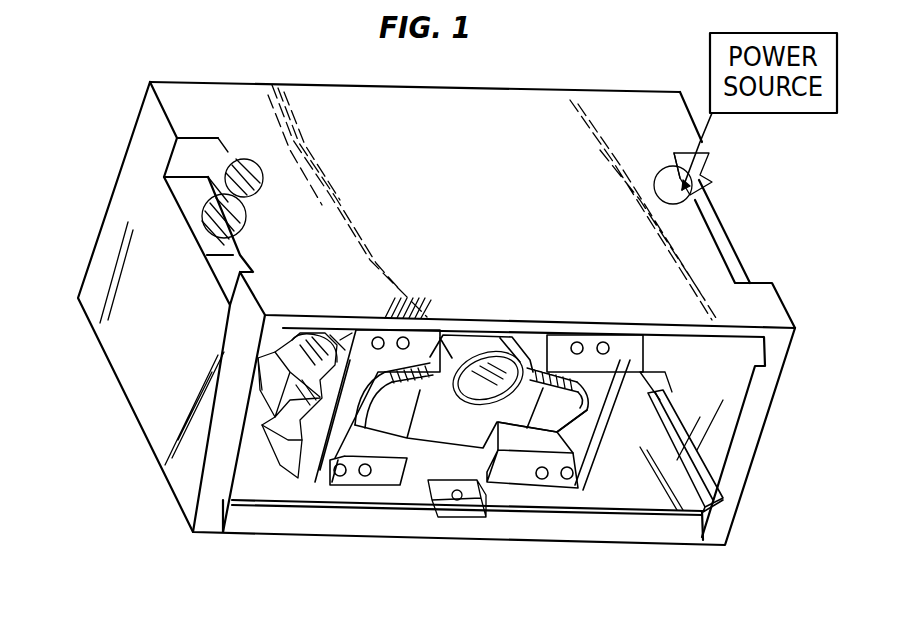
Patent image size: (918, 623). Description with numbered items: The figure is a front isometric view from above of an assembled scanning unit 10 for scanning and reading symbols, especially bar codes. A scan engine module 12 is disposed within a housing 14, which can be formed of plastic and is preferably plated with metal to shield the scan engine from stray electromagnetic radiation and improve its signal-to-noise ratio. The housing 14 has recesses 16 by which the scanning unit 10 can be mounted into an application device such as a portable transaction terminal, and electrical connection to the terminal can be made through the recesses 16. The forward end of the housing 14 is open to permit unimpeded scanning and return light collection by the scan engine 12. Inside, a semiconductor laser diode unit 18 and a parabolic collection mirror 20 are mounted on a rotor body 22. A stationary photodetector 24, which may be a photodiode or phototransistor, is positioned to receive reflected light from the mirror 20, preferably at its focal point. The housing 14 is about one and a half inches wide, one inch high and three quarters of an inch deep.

The scanning unit 10 is at (163, 410).
The scan engine module 12 is at (638, 485).
The housing 14 is at (780, 345).
The recesses 16 is at (187, 185).
The semiconductor laser diode unit 18 is at (487, 392).
The parabolic collection mirror 20 is at (560, 413).
The rotor body 22 is at (270, 445).
The stationary photodetector 24 is at (467, 513).